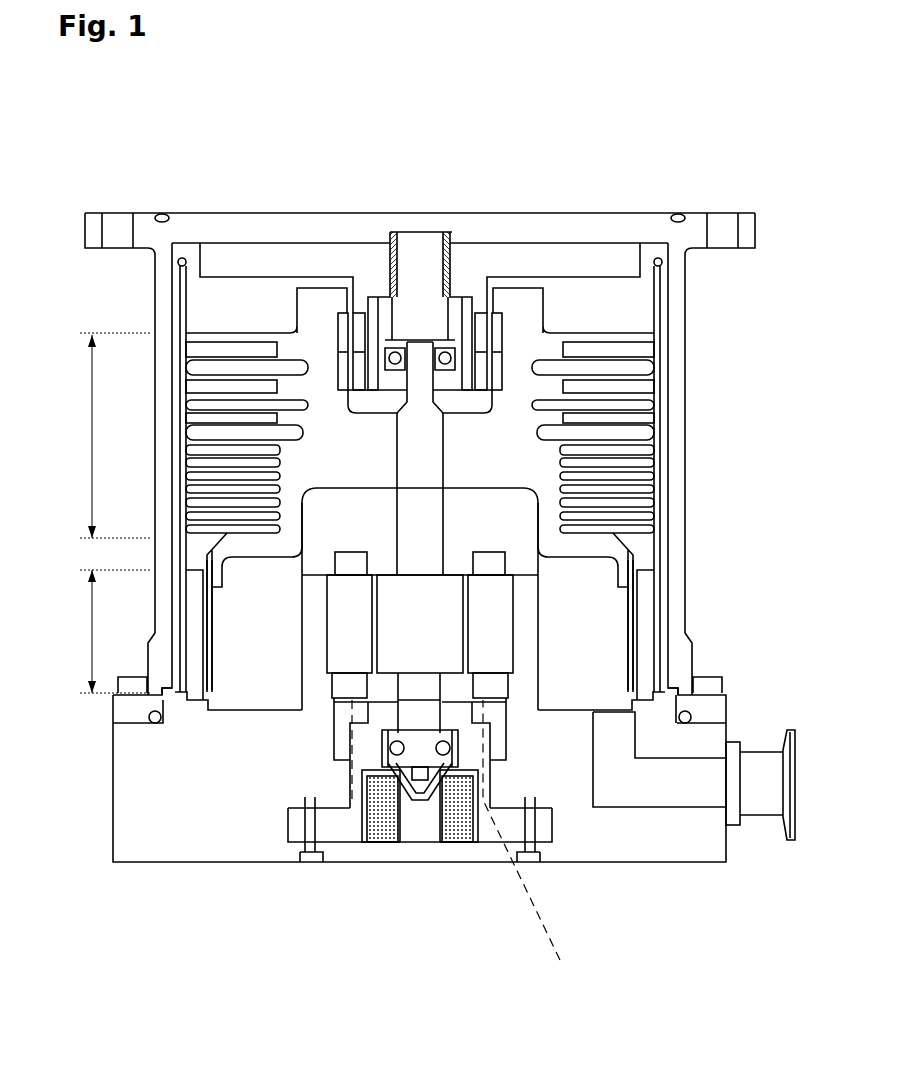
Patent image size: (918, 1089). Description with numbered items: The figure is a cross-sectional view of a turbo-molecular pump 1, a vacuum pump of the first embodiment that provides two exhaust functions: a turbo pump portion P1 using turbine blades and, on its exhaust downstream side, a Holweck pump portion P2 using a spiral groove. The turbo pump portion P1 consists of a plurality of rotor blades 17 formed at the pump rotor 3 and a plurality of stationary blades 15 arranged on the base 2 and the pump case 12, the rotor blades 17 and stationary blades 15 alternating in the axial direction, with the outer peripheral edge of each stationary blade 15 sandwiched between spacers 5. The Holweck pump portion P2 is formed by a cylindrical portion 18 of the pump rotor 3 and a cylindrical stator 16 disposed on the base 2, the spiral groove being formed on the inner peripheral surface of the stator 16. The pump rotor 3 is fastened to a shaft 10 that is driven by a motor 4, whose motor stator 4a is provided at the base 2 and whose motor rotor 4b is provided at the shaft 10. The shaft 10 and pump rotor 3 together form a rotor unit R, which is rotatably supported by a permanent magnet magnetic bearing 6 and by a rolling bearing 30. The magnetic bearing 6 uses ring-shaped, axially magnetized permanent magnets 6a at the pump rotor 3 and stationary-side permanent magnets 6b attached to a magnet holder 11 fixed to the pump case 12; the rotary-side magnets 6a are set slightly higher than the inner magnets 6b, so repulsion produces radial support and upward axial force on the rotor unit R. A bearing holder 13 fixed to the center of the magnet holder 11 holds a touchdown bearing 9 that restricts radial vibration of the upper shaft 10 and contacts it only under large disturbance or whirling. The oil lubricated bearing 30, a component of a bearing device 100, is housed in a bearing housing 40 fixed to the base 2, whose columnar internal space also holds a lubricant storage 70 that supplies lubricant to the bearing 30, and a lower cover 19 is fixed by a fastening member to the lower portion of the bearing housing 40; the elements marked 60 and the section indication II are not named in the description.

The turbo-molecular pump 1 is at (424, 567).
The base 2 is at (202, 838).
The pump rotor 3 is at (505, 395).
The motor 4 is at (368, 625).
The motor stator 4a is at (347, 617).
The motor rotor 4b is at (402, 644).
The spacers 5 is at (665, 422).
The permanent magnet magnetic bearing 6 is at (402, 255).
The rotary-side permanent magnets 6a is at (341, 316).
The stationary-side permanent magnets 6b is at (369, 316).
The bearing 9 is at (399, 346).
The shaft 10 is at (449, 517).
The magnet holder 11 is at (505, 252).
The pump case 12 is at (680, 478).
The bearing holder 13 is at (442, 238).
The stationary blades 15 is at (638, 372).
The stator 16 is at (646, 590).
The rotor blades 17 is at (636, 345).
The cylindrical portion 18 is at (646, 635).
The lower cover 19 is at (486, 808).
The bearing 30 is at (368, 790).
The bearing housing 40 is at (346, 778).
The magnetic pole 60 is at (417, 800).
The lubricant storage 70 is at (452, 823).
The bearing device 100 is at (382, 851).
The rotor unit R is at (285, 333).
The turbo pump portion P1 is at (101, 435).
The Holweck pump portion P2 is at (101, 631).
The section line II is at (466, 850).